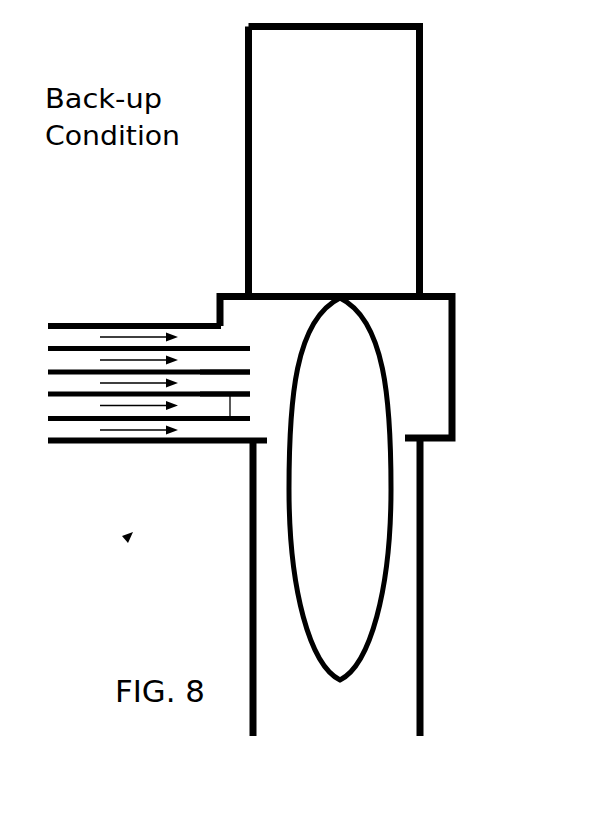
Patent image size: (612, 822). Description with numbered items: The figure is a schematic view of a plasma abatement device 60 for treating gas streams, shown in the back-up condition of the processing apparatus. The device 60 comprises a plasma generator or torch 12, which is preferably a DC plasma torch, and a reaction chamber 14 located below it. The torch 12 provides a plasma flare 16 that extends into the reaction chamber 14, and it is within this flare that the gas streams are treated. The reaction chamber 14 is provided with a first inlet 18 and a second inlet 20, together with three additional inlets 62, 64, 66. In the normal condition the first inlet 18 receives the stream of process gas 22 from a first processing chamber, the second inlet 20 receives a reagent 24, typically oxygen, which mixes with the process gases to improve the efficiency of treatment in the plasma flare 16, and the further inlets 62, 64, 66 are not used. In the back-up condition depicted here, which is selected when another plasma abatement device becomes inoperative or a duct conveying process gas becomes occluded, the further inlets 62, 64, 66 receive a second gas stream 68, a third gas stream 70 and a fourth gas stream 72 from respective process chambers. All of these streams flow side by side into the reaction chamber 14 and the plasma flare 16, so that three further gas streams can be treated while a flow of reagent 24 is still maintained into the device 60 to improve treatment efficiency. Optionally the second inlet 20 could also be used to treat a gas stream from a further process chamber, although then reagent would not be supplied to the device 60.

The plasma generator 12 is at (380, 195).
The reaction chamber 14 is at (425, 605).
The plasma flare 16 is at (363, 482).
The first inlet 18 is at (168, 325).
The second inlet 20 is at (100, 345).
The process gas 22 is at (45, 338).
The reagent 24 is at (45, 361).
The plasma abatement device 60 is at (127, 540).
The additional inlet 62 is at (220, 373).
The additional inlet 64 is at (228, 396).
The additional inlet 66 is at (83, 421).
The second gas stream 68 is at (45, 383).
The third gas stream 70 is at (45, 406).
The fourth gas stream 72 is at (45, 429).